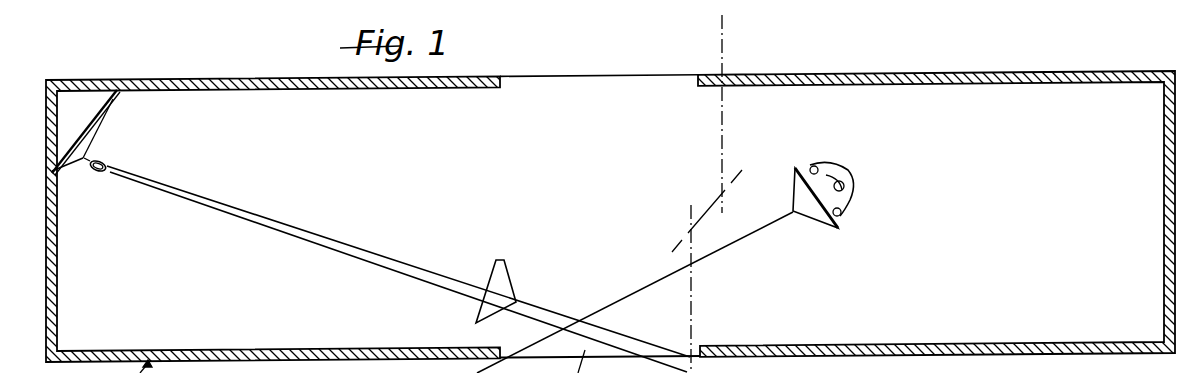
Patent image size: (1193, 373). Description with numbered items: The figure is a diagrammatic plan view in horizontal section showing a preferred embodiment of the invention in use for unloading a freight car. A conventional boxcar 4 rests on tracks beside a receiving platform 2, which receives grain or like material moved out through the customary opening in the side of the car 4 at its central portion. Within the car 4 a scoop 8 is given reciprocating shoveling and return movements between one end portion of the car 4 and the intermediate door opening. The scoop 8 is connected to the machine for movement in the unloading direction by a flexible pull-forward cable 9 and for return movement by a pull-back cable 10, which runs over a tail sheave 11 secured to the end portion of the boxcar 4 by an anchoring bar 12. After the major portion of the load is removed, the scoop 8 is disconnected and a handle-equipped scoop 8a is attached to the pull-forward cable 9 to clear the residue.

The receiving platform 2 is at (686, 43).
The boxcar 4 is at (890, 71).
The scoop 8 is at (508, 282).
The handle-equipped scoop 8a is at (822, 207).
The pull-forward cable 9 is at (737, 241).
The pull-back cable 10 is at (393, 266).
The tail sheave 11 is at (116, 164).
The anchoring bar 12 is at (115, 100).